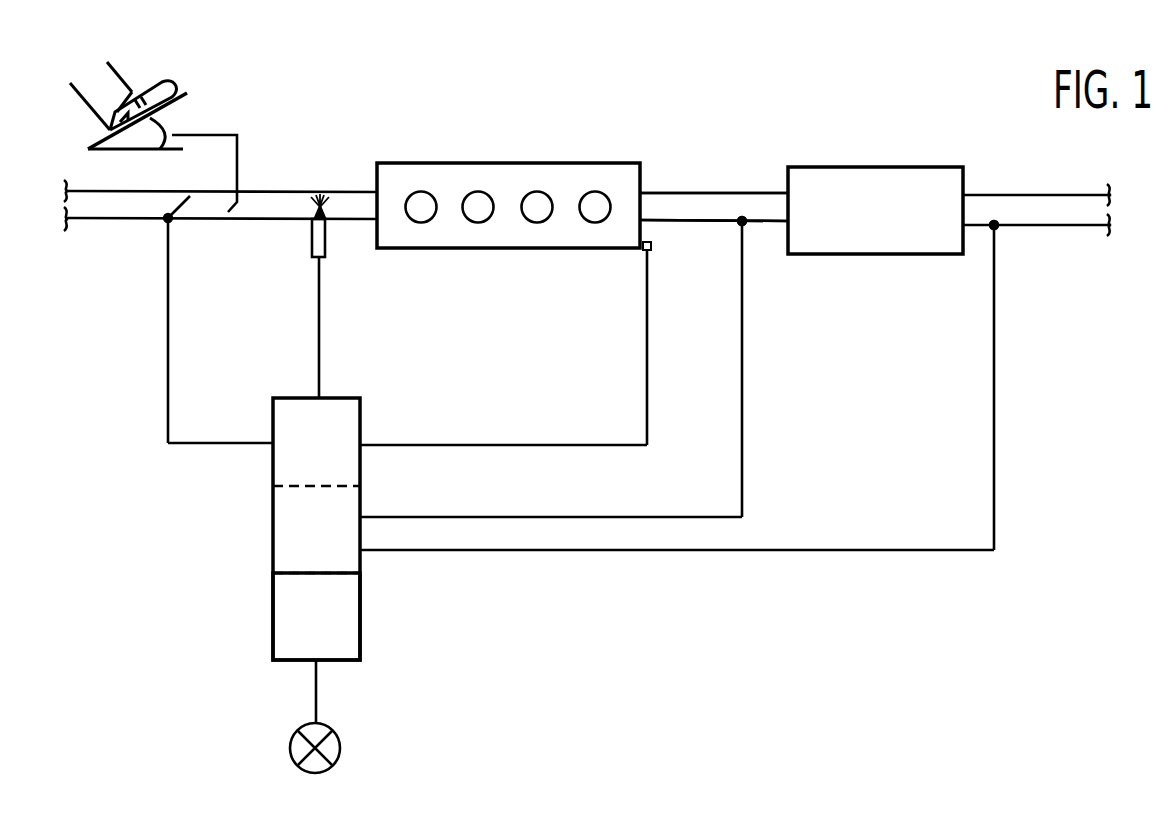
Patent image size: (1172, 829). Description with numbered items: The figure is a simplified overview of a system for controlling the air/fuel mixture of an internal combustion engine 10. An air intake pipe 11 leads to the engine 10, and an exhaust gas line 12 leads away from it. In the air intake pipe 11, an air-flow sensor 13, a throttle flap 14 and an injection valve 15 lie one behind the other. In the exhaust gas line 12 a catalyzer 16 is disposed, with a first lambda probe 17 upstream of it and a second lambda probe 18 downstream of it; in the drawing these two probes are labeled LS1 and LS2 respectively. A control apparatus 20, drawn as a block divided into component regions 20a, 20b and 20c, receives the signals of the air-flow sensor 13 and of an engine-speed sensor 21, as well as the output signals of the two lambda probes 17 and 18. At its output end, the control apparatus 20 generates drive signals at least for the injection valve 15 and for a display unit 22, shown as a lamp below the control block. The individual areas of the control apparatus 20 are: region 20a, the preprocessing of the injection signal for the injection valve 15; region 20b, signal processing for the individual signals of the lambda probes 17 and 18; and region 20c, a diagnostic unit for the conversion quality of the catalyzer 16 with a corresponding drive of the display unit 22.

The internal combustion engine 10 is at (503, 164).
The air intake pipe 11 is at (320, 190).
The exhaust gas line 12 is at (695, 192).
The air-flow sensor 13 is at (155, 220).
The throttle flap 14 is at (240, 204).
The injection valve 15 is at (317, 236).
The catalyzer 16 is at (872, 166).
The first lambda probe 17 is at (741, 226).
The second lambda probe 18 is at (993, 229).
The control apparatus 20 is at (581, 529).
The component region for preprocessing of the injection signal 20a is at (316, 451).
The component region for lambda probe signal processing 20b is at (316, 540).
The diagnostic unit 20c is at (316, 616).
The engine-speed sensor 21 is at (648, 250).
The display unit 22 is at (335, 752).
The first lambda sensor LS1 is at (743, 226).
The second lambda sensor LS2 is at (996, 228).